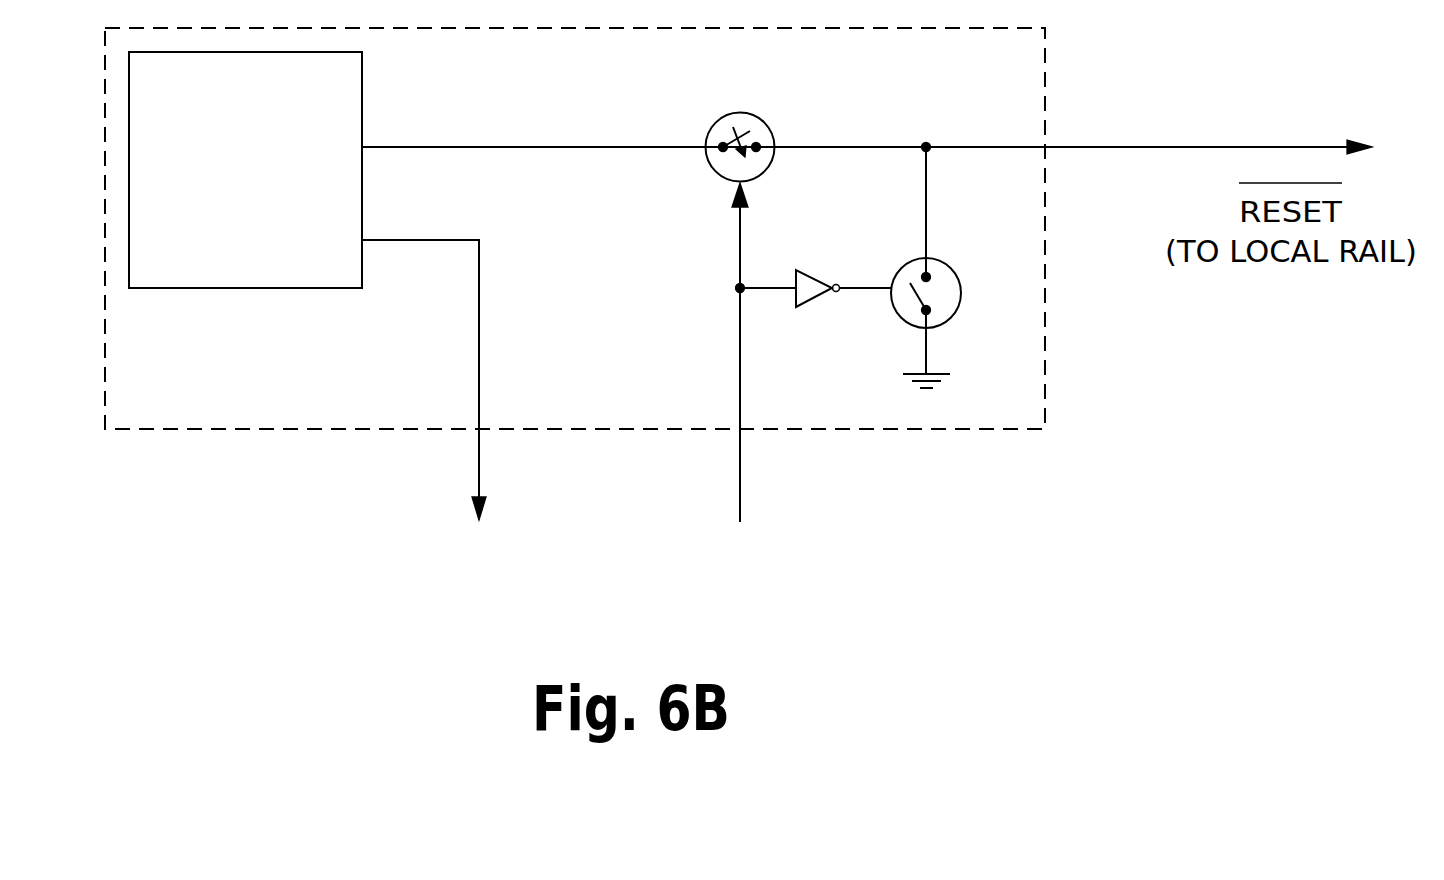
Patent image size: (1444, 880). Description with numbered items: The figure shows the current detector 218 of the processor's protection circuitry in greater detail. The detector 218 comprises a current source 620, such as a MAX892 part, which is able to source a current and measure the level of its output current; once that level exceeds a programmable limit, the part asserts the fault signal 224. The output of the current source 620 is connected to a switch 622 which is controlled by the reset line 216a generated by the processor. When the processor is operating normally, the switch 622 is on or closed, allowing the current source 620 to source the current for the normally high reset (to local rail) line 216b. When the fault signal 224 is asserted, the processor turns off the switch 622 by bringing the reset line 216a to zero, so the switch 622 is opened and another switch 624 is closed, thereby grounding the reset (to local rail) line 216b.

The current detector 218 is at (1045, 47).
The current source 620 is at (362, 88).
The switch 622 is at (735, 113).
The another switch 624 is at (950, 263).
The reset line 216a is at (740, 475).
The reset (to local rail) line 216b is at (1202, 147).
The fault signal 224 is at (478, 473).